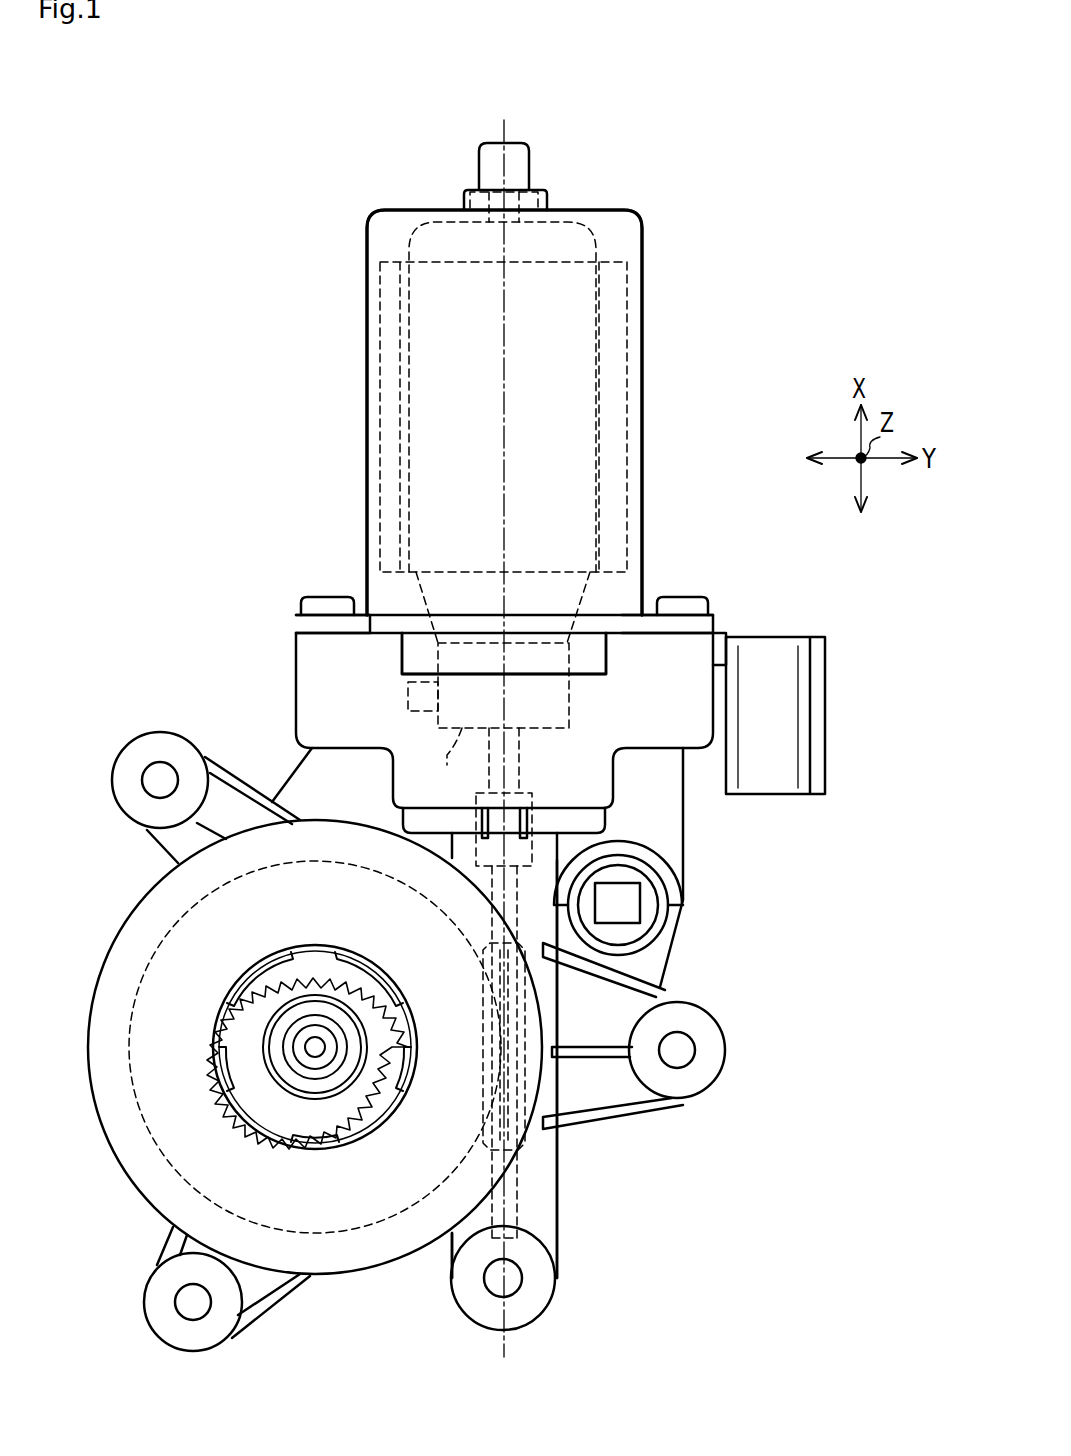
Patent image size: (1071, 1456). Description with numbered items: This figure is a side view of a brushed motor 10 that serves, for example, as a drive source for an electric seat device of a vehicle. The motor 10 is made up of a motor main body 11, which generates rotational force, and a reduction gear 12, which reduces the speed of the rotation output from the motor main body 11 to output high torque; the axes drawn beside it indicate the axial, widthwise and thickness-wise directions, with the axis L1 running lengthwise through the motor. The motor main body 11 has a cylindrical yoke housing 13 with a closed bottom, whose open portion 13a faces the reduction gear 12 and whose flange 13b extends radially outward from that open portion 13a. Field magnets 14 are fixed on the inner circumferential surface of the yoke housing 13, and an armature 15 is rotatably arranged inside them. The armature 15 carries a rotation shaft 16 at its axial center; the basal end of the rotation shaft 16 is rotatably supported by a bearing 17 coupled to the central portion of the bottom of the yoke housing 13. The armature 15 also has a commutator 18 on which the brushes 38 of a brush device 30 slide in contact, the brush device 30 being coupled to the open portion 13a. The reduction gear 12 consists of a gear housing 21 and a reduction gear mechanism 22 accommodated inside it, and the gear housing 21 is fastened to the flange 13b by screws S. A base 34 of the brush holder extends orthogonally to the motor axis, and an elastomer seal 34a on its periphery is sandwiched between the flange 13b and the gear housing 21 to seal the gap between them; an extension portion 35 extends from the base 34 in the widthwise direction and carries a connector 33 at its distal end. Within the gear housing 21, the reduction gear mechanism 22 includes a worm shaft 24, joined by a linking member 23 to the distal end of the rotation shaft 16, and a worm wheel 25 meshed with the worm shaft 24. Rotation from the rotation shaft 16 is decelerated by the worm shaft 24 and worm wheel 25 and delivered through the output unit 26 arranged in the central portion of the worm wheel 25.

The motor 10 is at (160, 578).
The motor main body 11 is at (235, 574).
The reduction gear 12 is at (224, 661).
The yoke housing 13 is at (367, 331).
The open portion 13a is at (622, 634).
The flange 13b is at (362, 632).
The field magnets 14 is at (624, 368).
The armature 15 is at (598, 318).
The rotation shaft 16 is at (519, 755).
The bearing 17 is at (462, 200).
The commutator 18 is at (447, 762).
The gear housing 21 is at (686, 855).
The reduction gear mechanism 22 is at (535, 1173).
The linking member 23 is at (478, 850).
The worm shaft 24 is at (487, 960).
The worm wheel 25 is at (179, 920).
The output unit 26 is at (328, 1035).
The brush device 30 is at (408, 620).
The connector 33 is at (826, 688).
The base 34 is at (504, 653).
The seal 34a is at (588, 660).
The extension portion 35 is at (720, 638).
The brushes 38 is at (407, 697).
The screws S is at (316, 597).
The axis of rotary shaft L1 is at (504, 120).